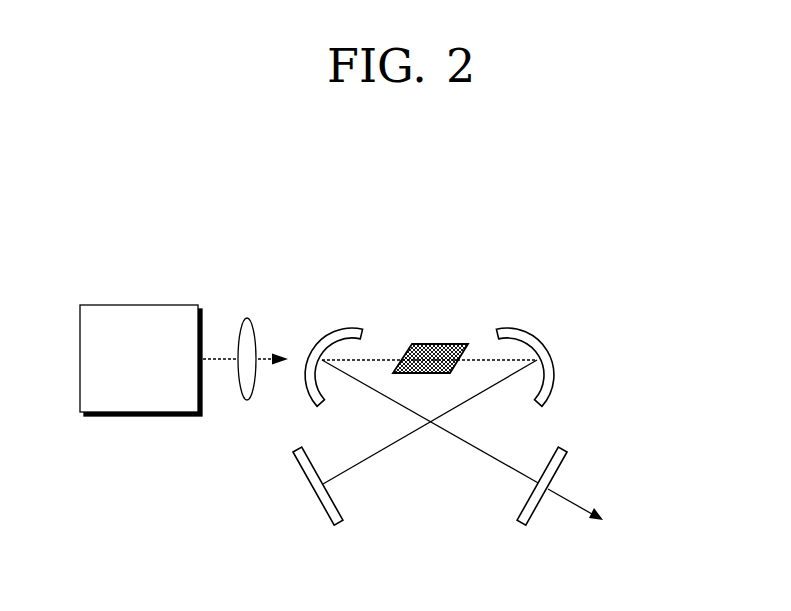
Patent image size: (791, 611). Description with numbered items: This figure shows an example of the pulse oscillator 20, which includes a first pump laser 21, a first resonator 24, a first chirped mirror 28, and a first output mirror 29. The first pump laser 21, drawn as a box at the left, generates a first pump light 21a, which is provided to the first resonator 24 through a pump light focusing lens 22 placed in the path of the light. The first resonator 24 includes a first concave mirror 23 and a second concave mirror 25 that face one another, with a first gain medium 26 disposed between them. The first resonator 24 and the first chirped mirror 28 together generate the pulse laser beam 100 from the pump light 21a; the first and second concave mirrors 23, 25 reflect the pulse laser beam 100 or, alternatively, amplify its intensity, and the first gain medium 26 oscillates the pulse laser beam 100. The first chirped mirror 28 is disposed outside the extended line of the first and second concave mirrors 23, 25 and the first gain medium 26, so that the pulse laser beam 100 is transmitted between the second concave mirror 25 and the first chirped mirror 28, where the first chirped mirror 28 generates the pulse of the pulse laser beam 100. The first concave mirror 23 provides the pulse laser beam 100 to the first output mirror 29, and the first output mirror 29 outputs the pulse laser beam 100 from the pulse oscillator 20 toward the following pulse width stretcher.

The pulse oscillator 20 is at (617, 281).
The first pump laser 21 is at (165, 305).
The first pump light 21a is at (223, 364).
The pump light focusing lens 22 is at (247, 317).
The first concave mirror 23 is at (337, 328).
The first resonator 24 is at (327, 253).
The second concave mirror 25 is at (520, 330).
The first gain medium 26 is at (427, 343).
The first chirped mirror 28 is at (328, 513).
The first output mirror 29 is at (531, 516).
The pulse laser beam 100 is at (445, 432).